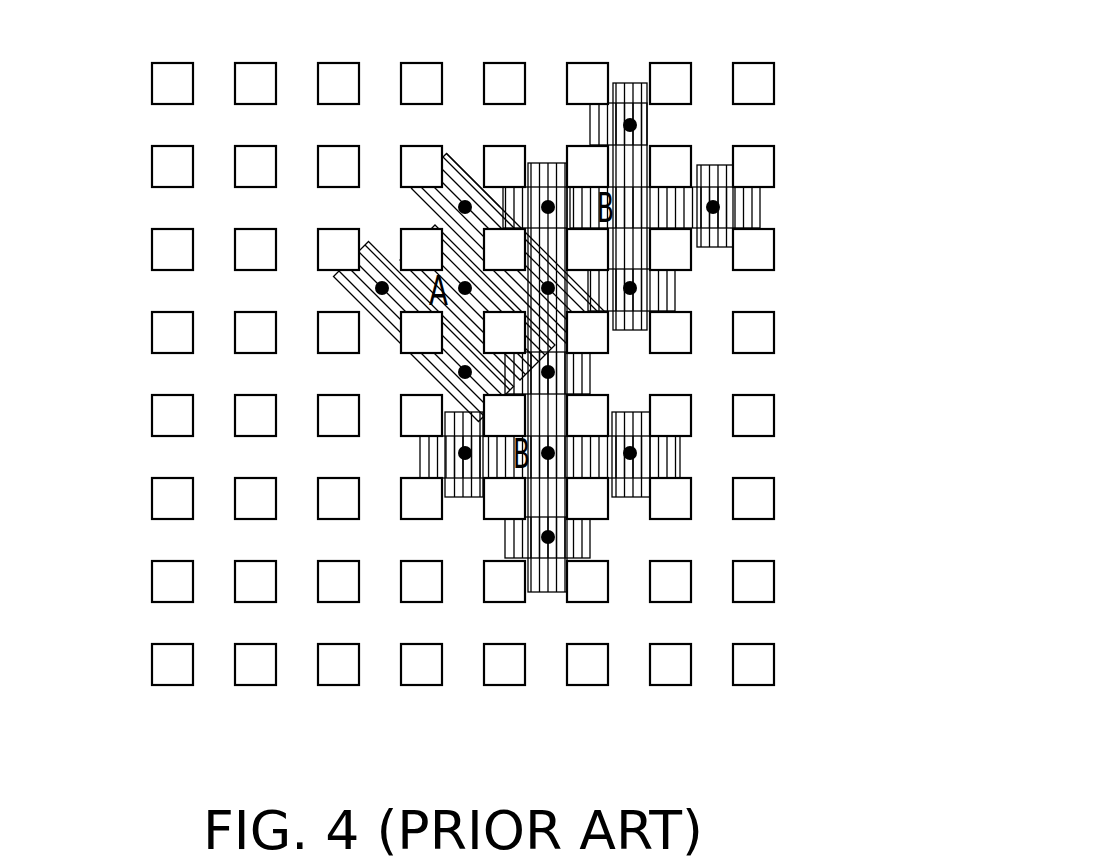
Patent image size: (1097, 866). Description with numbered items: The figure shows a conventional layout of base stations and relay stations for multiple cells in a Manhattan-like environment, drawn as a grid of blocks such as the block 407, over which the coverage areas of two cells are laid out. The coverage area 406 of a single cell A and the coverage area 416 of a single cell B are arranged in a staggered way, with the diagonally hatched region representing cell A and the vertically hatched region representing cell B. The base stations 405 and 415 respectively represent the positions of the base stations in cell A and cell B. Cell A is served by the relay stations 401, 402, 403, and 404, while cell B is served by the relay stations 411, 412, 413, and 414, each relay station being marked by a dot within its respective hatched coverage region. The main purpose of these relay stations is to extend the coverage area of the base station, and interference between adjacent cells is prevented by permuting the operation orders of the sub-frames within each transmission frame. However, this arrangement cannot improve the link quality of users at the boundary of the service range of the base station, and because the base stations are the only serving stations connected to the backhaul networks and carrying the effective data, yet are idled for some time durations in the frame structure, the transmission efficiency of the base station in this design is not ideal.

The relay station 401 is at (458, 207).
The relay station 402 is at (560, 263).
The relay station 403 is at (465, 296).
The relay station 404 is at (375, 289).
The base station 405 is at (458, 372).
The coverage area 406 is at (472, 160).
The logic cell block 407 is at (177, 80).
The relay station 411 is at (637, 125).
The relay station 412 is at (720, 207).
The relay station 413 is at (637, 288).
The relay station 414 is at (548, 200).
The base station 415 is at (722, 198).
The coverage area 416 is at (630, 117).